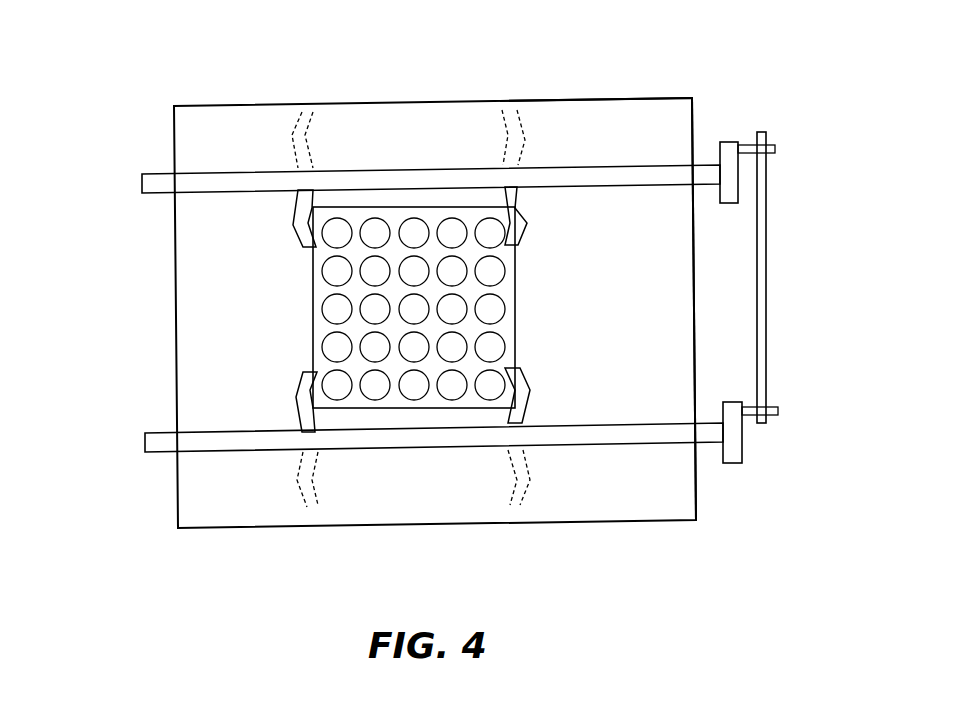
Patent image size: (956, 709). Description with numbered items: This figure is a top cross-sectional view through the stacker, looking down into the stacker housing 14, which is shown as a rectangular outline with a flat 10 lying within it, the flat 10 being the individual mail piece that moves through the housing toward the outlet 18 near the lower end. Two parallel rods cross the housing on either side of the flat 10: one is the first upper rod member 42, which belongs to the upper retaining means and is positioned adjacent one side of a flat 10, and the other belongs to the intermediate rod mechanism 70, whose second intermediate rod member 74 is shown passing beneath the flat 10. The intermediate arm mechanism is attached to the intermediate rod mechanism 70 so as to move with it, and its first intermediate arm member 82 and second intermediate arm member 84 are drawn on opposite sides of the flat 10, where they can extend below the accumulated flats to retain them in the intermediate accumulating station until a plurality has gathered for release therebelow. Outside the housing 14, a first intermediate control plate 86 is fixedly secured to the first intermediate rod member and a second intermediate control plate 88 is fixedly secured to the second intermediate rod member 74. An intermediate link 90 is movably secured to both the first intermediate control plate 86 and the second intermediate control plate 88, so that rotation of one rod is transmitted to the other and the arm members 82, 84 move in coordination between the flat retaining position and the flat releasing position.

The flat 10 is at (512, 300).
The stacker housing 14 is at (253, 105).
The outlet 18 is at (693, 303).
The first upper rod member 42 is at (598, 173).
The intermediate rod mechanism 70 is at (150, 181).
The second intermediate rod member 74 is at (622, 437).
The first intermediate arm member 82 is at (300, 237).
The second intermediate arm member 84 is at (302, 405).
The first intermediate control plate 86 is at (725, 142).
The second intermediate control plate 88 is at (738, 450).
The intermediate link 90 is at (760, 210).